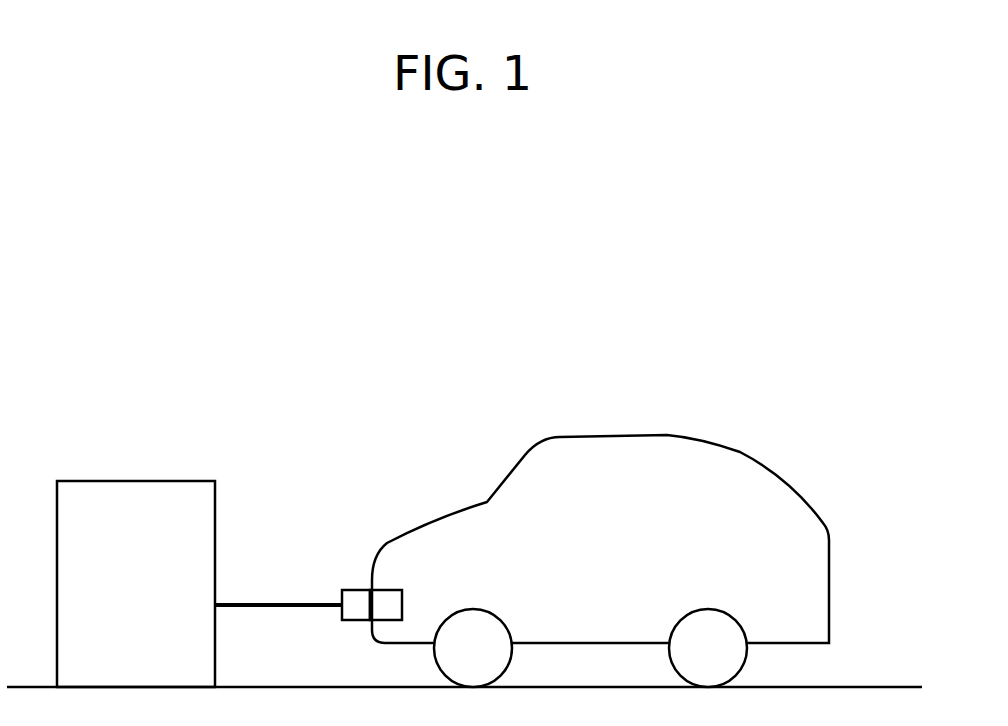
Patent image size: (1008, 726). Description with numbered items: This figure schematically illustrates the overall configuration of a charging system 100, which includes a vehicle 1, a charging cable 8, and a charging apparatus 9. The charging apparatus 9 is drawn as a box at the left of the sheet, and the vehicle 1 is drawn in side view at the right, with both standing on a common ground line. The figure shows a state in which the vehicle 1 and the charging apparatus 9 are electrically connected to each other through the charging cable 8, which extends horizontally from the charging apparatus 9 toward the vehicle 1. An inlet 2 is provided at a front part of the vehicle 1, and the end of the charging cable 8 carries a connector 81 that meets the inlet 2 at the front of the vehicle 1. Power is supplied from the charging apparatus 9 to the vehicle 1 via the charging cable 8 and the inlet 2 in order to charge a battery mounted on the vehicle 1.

The charging system 100 is at (155, 345).
The vehicle 1 is at (692, 437).
The inlet 2 is at (383, 590).
The charging cable 8 is at (288, 604).
The connector 81 is at (356, 590).
The charging apparatus 9 is at (166, 480).